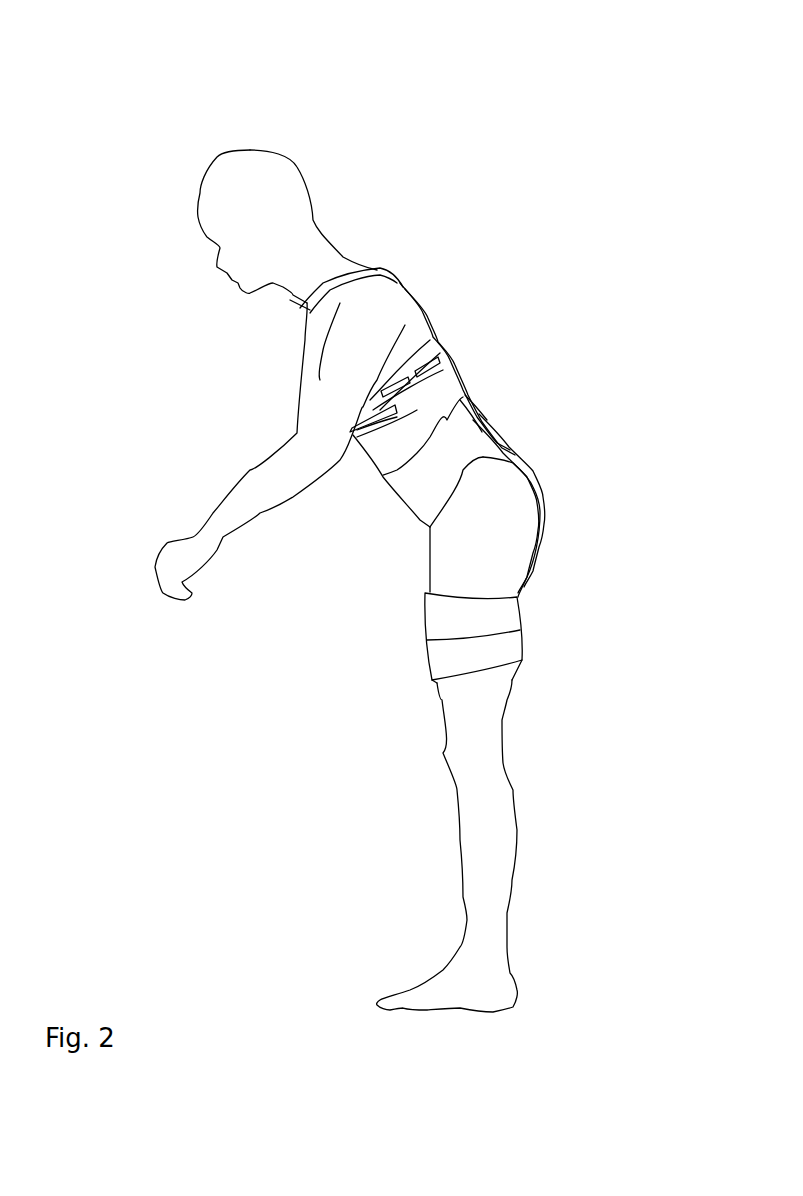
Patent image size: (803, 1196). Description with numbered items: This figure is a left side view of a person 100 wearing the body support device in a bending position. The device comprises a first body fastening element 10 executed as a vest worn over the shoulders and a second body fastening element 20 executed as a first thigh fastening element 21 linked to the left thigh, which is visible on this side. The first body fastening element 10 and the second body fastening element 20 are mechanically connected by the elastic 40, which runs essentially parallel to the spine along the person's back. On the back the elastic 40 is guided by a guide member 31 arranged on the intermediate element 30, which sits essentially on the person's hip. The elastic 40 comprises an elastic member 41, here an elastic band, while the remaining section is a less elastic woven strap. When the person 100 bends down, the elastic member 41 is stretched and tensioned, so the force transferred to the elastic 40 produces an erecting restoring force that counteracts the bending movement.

The person 100 is at (200, 143).
The first body fastening element 10 is at (407, 292).
The elastic member 41 is at (443, 333).
The elastic 40 is at (530, 467).
The guide member 31 is at (480, 410).
The intermediate element 30 is at (472, 448).
The second body fastening element 20 is at (508, 637).
The first thigh fastening element 21 is at (473, 635).